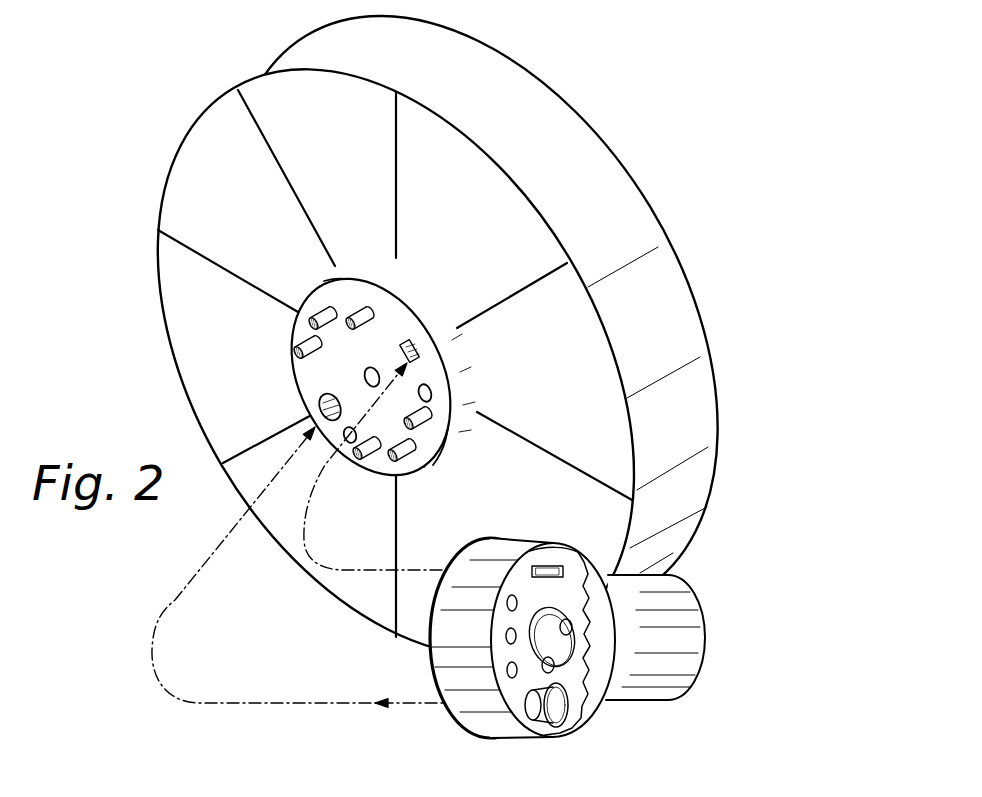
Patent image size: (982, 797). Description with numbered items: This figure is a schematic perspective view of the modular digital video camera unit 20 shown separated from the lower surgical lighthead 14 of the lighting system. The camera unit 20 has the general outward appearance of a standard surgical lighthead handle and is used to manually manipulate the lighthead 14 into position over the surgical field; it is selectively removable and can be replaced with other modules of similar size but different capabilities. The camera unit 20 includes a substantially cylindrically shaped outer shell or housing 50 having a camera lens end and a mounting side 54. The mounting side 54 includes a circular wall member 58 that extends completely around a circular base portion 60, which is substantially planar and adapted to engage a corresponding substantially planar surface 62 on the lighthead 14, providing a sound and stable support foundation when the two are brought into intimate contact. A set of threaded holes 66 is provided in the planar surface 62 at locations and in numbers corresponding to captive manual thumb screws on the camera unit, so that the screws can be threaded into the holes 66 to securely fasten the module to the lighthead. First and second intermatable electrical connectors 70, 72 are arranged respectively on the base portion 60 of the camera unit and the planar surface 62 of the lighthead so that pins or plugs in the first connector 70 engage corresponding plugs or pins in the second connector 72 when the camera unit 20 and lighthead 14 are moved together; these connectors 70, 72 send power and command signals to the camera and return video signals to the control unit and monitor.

The lower surgical lighthead 14 is at (604, 132).
The modular digital video camera unit 20 is at (560, 635).
The outer shell or housing 50 is at (678, 668).
The mounting side 54 is at (434, 730).
The circular wall member 58 is at (542, 733).
The circular base portion 60 is at (631, 635).
The planar surface 62 is at (332, 380).
The threaded holes 66 is at (320, 311).
The first intermatable electrical connector 70 is at (551, 566).
The second intermatable electrical connector 72 is at (410, 341).